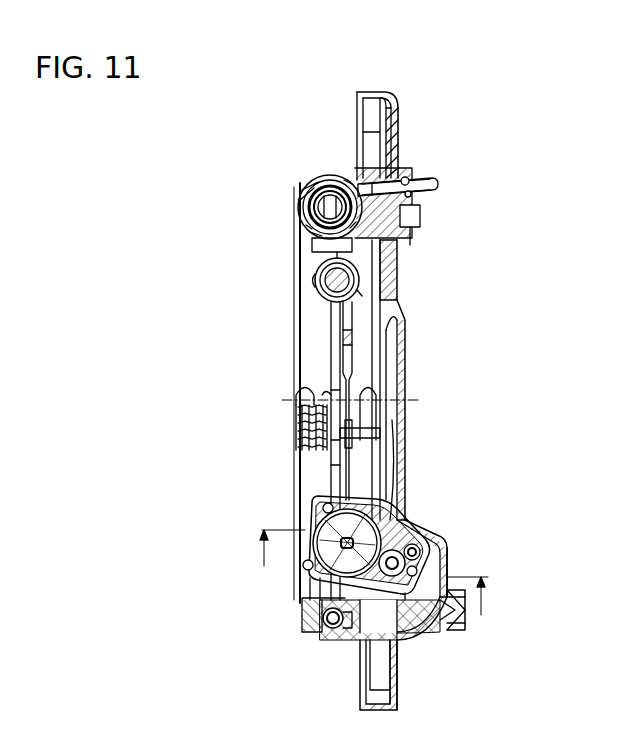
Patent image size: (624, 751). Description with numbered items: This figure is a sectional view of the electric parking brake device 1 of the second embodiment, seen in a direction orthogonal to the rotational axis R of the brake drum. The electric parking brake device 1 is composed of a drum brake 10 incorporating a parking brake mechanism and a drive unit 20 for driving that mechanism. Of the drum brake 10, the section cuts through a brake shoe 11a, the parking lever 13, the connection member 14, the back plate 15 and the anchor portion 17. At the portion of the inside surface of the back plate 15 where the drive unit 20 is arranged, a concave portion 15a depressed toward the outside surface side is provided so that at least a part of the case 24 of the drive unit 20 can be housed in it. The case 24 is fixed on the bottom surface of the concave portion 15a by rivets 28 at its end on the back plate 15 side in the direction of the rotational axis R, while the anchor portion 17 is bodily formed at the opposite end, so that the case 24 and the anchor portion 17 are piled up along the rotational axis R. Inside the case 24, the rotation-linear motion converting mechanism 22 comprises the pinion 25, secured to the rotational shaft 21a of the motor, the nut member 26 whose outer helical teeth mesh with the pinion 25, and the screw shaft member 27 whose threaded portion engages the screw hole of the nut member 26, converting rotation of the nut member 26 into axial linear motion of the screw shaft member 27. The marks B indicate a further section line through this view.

The electric parking brake device 1 is at (446, 74).
The drum brake 10 is at (362, 92).
The brake shoe 11a is at (335, 340).
The parking lever 13 is at (342, 368).
The connection member 14 is at (322, 274).
The back plate 15 is at (405, 302).
The concave portion 15a is at (450, 560).
The anchor portion 17 is at (311, 622).
The drive unit 20 is at (312, 506).
The rotational shaft 21a is at (374, 660).
The rotation-linear motion converting mechanism 22 is at (410, 530).
The case 24 is at (318, 530).
The pinion 25 is at (356, 624).
The nut member 26 is at (342, 550).
The screw shaft member 27 is at (380, 560).
The rivets 28 is at (455, 628).
The rotational axis R is at (415, 400).
The section line B is at (372, 584).